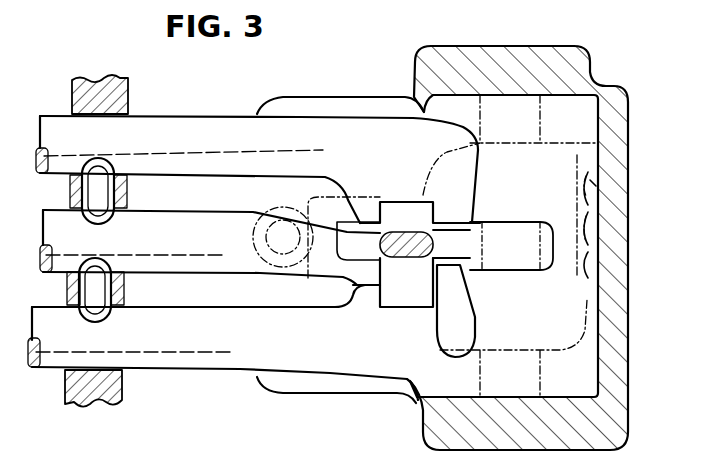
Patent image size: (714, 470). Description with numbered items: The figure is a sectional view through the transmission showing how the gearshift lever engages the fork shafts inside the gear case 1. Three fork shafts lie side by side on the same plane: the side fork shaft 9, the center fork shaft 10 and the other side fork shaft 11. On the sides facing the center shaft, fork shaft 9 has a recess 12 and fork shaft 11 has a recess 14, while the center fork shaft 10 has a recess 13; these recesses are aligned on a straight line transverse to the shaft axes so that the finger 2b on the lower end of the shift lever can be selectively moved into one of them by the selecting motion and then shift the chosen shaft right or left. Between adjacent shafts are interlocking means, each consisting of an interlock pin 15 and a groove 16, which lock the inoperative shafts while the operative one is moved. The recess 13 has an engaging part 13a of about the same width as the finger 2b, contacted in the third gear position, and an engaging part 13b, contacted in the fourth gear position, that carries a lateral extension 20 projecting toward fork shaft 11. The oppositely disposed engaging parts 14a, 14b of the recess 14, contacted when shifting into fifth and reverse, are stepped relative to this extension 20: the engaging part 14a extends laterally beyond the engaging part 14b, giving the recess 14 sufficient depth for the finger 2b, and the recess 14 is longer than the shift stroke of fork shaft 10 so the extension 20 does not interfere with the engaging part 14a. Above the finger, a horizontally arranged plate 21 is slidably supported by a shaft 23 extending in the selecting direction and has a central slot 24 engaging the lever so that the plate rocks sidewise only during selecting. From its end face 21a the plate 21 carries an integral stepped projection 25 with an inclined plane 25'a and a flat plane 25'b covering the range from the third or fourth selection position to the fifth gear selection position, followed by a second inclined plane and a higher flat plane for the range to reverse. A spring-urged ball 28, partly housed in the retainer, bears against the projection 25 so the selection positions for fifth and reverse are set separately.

The gear case 1 is at (129, 80).
The side fork shaft 9 is at (194, 115).
The center fork shaft 10 is at (183, 211).
The side fork shaft 11 is at (166, 309).
The recess 12 is at (392, 206).
The recess 13 is at (428, 240).
The engaging part 13a is at (477, 248).
The engaging part 13b is at (359, 241).
The recess 14 is at (405, 307).
The engaging part 14a is at (450, 283).
The engaging part 14b is at (363, 289).
The interlock pin 15 is at (88, 160).
The groove 16 is at (104, 158).
The finger 2b is at (396, 259).
The lateral extension 20 is at (375, 268).
The plate 21 is at (540, 131).
The end face 21a is at (582, 338).
The shaft 23 is at (490, 106).
The slot 24 is at (520, 222).
The stepped projection 25 is at (623, 176).
The flat plane 25'b is at (632, 226).
The inclined plane 25'a is at (630, 238).
The ball 28 is at (588, 262).